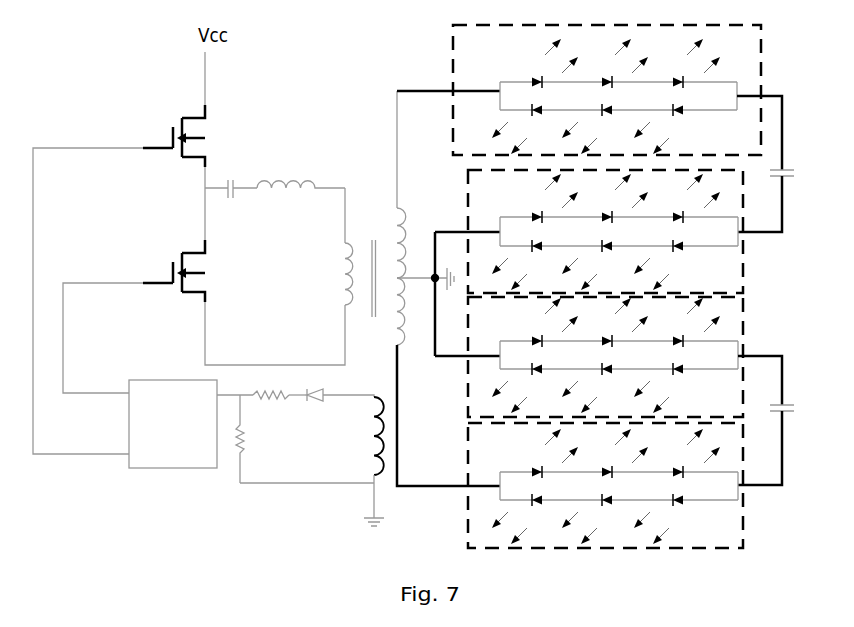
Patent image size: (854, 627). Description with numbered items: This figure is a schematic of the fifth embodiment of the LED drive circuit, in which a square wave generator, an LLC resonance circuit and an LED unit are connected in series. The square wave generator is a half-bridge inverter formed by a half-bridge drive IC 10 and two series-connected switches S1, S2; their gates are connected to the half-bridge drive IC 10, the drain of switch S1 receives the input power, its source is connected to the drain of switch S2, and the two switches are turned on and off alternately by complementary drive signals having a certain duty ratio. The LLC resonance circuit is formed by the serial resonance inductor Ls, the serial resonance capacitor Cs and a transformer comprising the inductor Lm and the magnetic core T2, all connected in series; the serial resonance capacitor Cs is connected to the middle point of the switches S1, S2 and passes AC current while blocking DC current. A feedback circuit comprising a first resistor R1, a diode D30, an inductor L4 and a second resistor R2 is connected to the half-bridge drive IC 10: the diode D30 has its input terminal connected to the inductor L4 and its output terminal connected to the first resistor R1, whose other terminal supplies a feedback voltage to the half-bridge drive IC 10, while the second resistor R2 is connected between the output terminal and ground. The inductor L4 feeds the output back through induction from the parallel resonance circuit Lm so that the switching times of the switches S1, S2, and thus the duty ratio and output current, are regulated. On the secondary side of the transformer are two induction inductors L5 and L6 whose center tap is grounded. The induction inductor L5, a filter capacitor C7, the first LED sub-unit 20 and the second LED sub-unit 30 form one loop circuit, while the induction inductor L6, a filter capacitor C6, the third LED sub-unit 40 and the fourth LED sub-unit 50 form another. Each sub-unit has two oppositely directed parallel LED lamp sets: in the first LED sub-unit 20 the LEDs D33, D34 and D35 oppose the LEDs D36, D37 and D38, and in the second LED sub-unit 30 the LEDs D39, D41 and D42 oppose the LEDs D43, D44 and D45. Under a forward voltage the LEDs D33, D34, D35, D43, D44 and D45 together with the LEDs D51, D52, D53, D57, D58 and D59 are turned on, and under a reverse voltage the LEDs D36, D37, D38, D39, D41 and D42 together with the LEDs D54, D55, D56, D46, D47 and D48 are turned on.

The half-bridge drive IC 10 is at (163, 468).
The first LED sub-unit 20 is at (631, 90).
The second LED sub-unit 30 is at (630, 231).
The third LED sub-unit 40 is at (630, 357).
The fourth LED sub-unit 50 is at (630, 485).
The switch S1 is at (174, 136).
The switch S2 is at (174, 271).
The serial resonance capacitor Cs is at (231, 179).
The serial resonance inductor Ls is at (301, 174).
The inductor Lm is at (330, 274).
The magnetic core T2 is at (370, 293).
The induction inductor L5 is at (413, 311).
The induction inductor L6 is at (413, 243).
The first resistor R1 is at (271, 384).
The second resistor R2 is at (255, 439).
The diode D30 is at (325, 385).
The inductor L4 is at (363, 436).
The filter capacitor C6 is at (771, 175).
The filter capacitor C7 is at (771, 410).
The LED D33 is at (548, 63).
The LED D34 is at (622, 63).
The LED D35 is at (693, 63).
The LED D36 is at (527, 129).
The LED D37 is at (597, 129).
The LED D38 is at (673, 129).
The LED D39 is at (546, 198).
The LED D41 is at (619, 198).
The LED D42 is at (691, 198).
The LED D43 is at (526, 265).
The LED D44 is at (595, 265).
The LED D45 is at (668, 265).
The LED D51 is at (548, 322).
The LED D52 is at (622, 322).
The LED D53 is at (693, 322).
The LED D46 is at (527, 388).
The LED D47 is at (597, 388).
The LED D48 is at (673, 388).
The LED D54 is at (546, 453).
The LED D55 is at (619, 453).
The LED D56 is at (690, 453).
The LED D57 is at (525, 519).
The LED D58 is at (594, 519).
The LED D59 is at (667, 519).